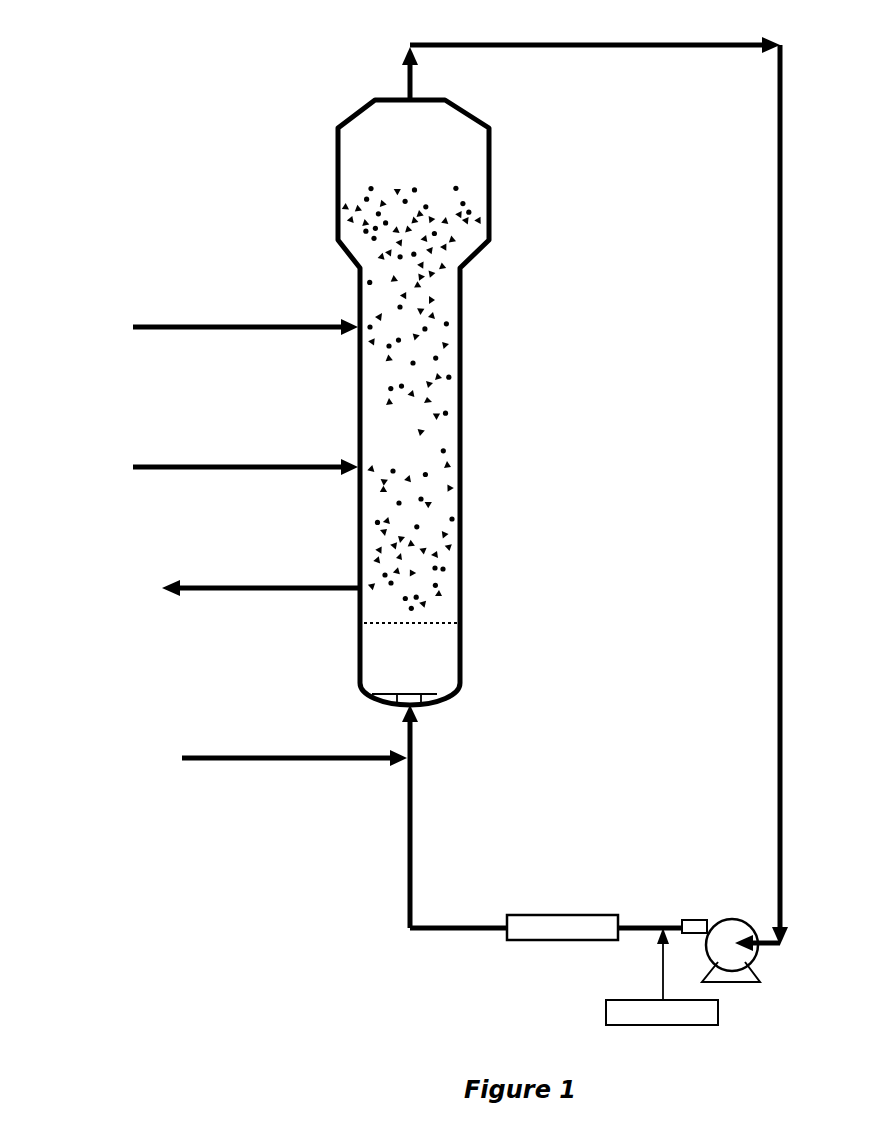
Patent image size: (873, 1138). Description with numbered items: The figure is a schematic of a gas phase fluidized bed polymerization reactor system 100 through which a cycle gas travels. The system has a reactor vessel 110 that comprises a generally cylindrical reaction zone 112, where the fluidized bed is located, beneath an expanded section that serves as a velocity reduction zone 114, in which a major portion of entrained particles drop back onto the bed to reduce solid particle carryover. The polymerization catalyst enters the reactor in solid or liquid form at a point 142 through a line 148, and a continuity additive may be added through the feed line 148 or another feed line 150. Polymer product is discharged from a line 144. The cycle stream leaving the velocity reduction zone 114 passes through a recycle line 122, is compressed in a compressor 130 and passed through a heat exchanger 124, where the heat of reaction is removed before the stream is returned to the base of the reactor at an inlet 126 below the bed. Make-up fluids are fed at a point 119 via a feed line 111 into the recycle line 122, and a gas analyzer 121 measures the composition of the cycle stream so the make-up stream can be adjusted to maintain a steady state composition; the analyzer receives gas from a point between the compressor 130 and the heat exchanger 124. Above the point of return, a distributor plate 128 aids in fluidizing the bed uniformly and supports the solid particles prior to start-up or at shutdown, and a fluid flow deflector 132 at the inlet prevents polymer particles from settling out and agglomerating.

The fluidized bed polymerization reactor system 100 is at (203, 104).
The reactor vessel 110 is at (357, 508).
The reaction zone 112 is at (411, 441).
The velocity reduction zone 114 is at (411, 203).
The feed line 111 is at (200, 764).
The feed point 119 is at (405, 762).
The gas analyzer 121 is at (660, 1027).
The recycle line 122 is at (782, 553).
The heat exchanger 124 is at (563, 913).
The inlet 126 is at (404, 710).
The distributor plate 128 is at (382, 627).
The compressor 130 is at (738, 921).
The fluid flow deflector 132 is at (374, 695).
The catalyst entry point 142 is at (356, 334).
The product discharge line 144 is at (294, 586).
The catalyst feed line 148 is at (200, 333).
The feed line 150 is at (200, 473).